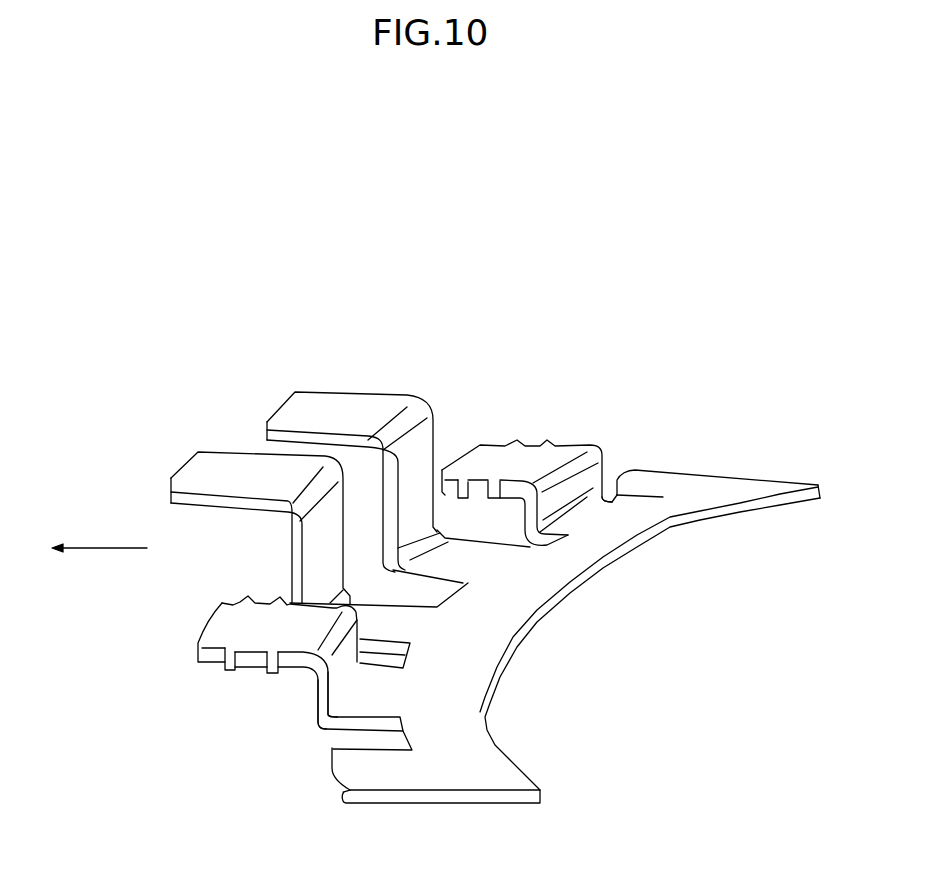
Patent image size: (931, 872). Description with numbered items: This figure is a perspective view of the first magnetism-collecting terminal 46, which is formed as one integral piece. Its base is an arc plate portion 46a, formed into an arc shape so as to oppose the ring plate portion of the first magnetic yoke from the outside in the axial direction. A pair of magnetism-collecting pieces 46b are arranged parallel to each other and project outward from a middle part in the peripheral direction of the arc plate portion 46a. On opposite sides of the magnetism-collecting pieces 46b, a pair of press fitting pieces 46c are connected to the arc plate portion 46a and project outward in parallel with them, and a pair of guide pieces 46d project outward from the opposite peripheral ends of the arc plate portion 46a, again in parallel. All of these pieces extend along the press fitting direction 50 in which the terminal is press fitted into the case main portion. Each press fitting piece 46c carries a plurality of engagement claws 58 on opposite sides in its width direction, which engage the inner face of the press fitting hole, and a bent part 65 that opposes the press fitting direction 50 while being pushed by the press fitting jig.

The first magnetism-collecting terminal 46 is at (570, 650).
The arc plate portion 46a is at (533, 570).
The magnetism-collecting pieces 46b is at (342, 402).
The press fitting pieces 46c is at (490, 450).
The guide pieces 46d is at (637, 480).
The press fitting direction 50 is at (100, 547).
The engagement claws 58 is at (497, 490).
The bent part 65 is at (608, 498).